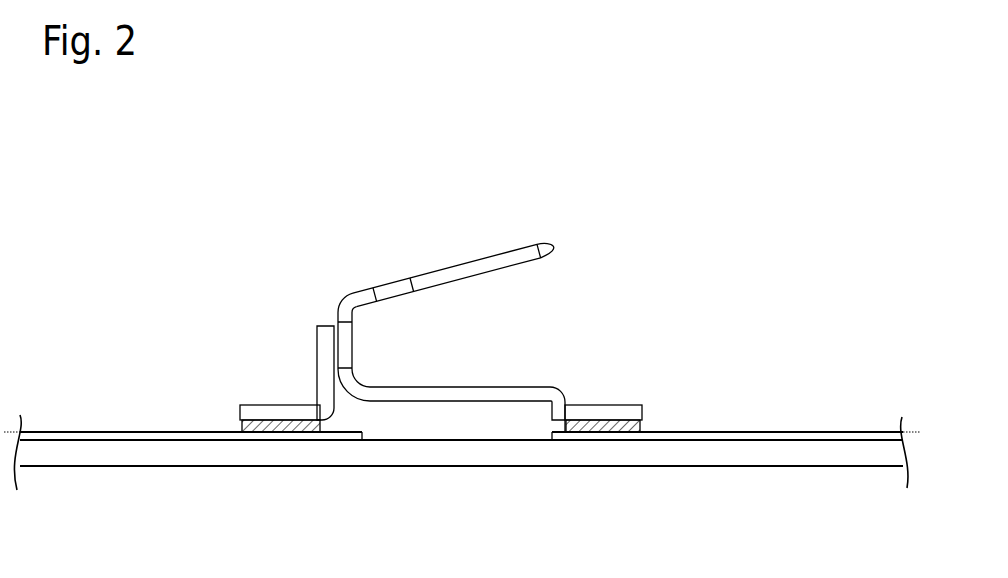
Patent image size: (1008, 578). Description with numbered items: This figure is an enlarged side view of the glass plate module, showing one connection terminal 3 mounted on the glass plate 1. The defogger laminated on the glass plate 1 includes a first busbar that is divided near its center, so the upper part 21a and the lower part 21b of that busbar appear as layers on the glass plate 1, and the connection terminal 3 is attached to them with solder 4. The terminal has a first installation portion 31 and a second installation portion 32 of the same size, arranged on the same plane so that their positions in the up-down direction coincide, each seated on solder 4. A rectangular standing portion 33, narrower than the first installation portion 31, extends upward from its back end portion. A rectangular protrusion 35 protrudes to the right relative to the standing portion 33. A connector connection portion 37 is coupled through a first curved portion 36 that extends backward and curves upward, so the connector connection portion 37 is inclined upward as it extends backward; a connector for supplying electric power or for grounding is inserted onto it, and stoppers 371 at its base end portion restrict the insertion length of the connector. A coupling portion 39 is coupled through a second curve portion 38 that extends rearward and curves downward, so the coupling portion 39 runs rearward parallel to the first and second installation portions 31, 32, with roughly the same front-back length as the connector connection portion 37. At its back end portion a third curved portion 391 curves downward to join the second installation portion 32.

The glass plate 1 is at (417, 458).
The upper part of first busbar 21a is at (740, 432).
The lower part of first busbar 21b is at (130, 432).
The connection terminal 3 is at (484, 353).
The first installation portion 31 is at (290, 405).
The second installation portion 32 is at (623, 406).
The standing portion 33 is at (325, 375).
The protrusion 35 is at (350, 345).
The first curved portion 36 is at (343, 293).
The connector connection portion 37 is at (455, 272).
The stopper 371 is at (400, 298).
The second curve portion 38 is at (355, 393).
The coupling portion 39 is at (478, 397).
The third curved portion 391 is at (557, 392).
The solder 4 is at (240, 428).